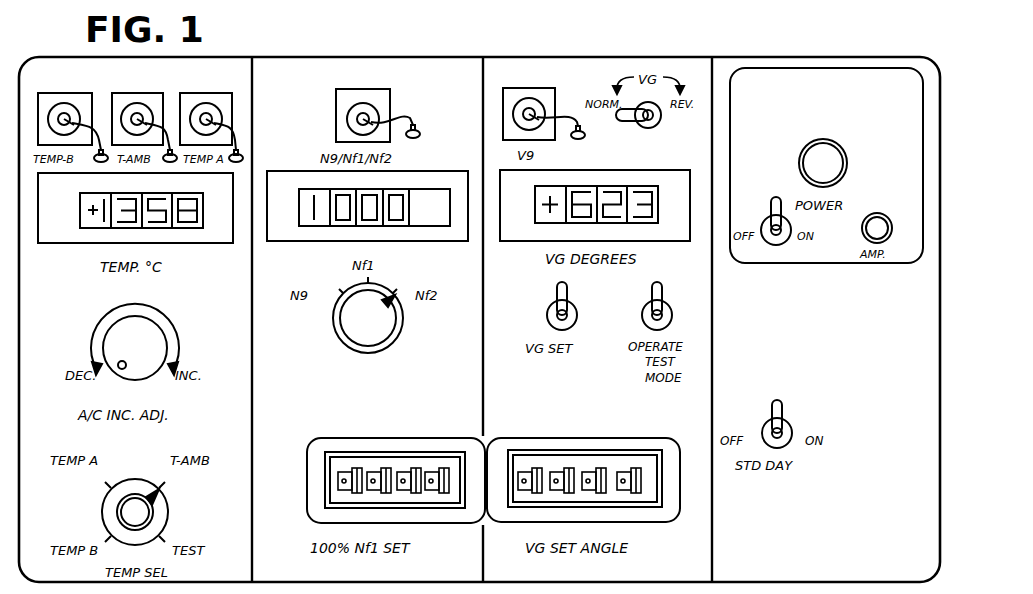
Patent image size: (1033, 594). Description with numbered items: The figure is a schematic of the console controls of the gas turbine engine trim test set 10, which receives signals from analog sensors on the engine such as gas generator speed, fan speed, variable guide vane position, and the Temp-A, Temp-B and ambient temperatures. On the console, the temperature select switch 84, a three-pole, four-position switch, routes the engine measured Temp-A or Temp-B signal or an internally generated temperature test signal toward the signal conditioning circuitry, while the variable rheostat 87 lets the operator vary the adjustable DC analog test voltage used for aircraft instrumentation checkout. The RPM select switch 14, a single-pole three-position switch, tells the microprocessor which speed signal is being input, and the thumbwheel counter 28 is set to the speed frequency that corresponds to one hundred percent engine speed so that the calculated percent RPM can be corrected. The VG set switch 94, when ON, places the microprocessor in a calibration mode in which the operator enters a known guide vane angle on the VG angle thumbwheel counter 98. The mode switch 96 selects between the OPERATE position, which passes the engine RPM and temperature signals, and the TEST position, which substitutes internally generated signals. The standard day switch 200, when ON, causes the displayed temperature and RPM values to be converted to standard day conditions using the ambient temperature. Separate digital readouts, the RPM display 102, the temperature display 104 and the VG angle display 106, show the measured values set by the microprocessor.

The trim test set 10 is at (721, 36).
The temperature display 104 is at (55, 241).
The variable rheostat 87 is at (146, 373).
The temperature select switch 84 is at (154, 512).
The RPM display 102 is at (283, 238).
The RPM select switch 14 is at (388, 325).
The thumbwheel counter 28 is at (309, 486).
The VG angle display 106 is at (517, 238).
The VG set switch 94 is at (557, 293).
The mode switch 96 is at (652, 292).
The VG angle thumbwheel counter 98 is at (653, 441).
The standard day switch 200 is at (784, 410).